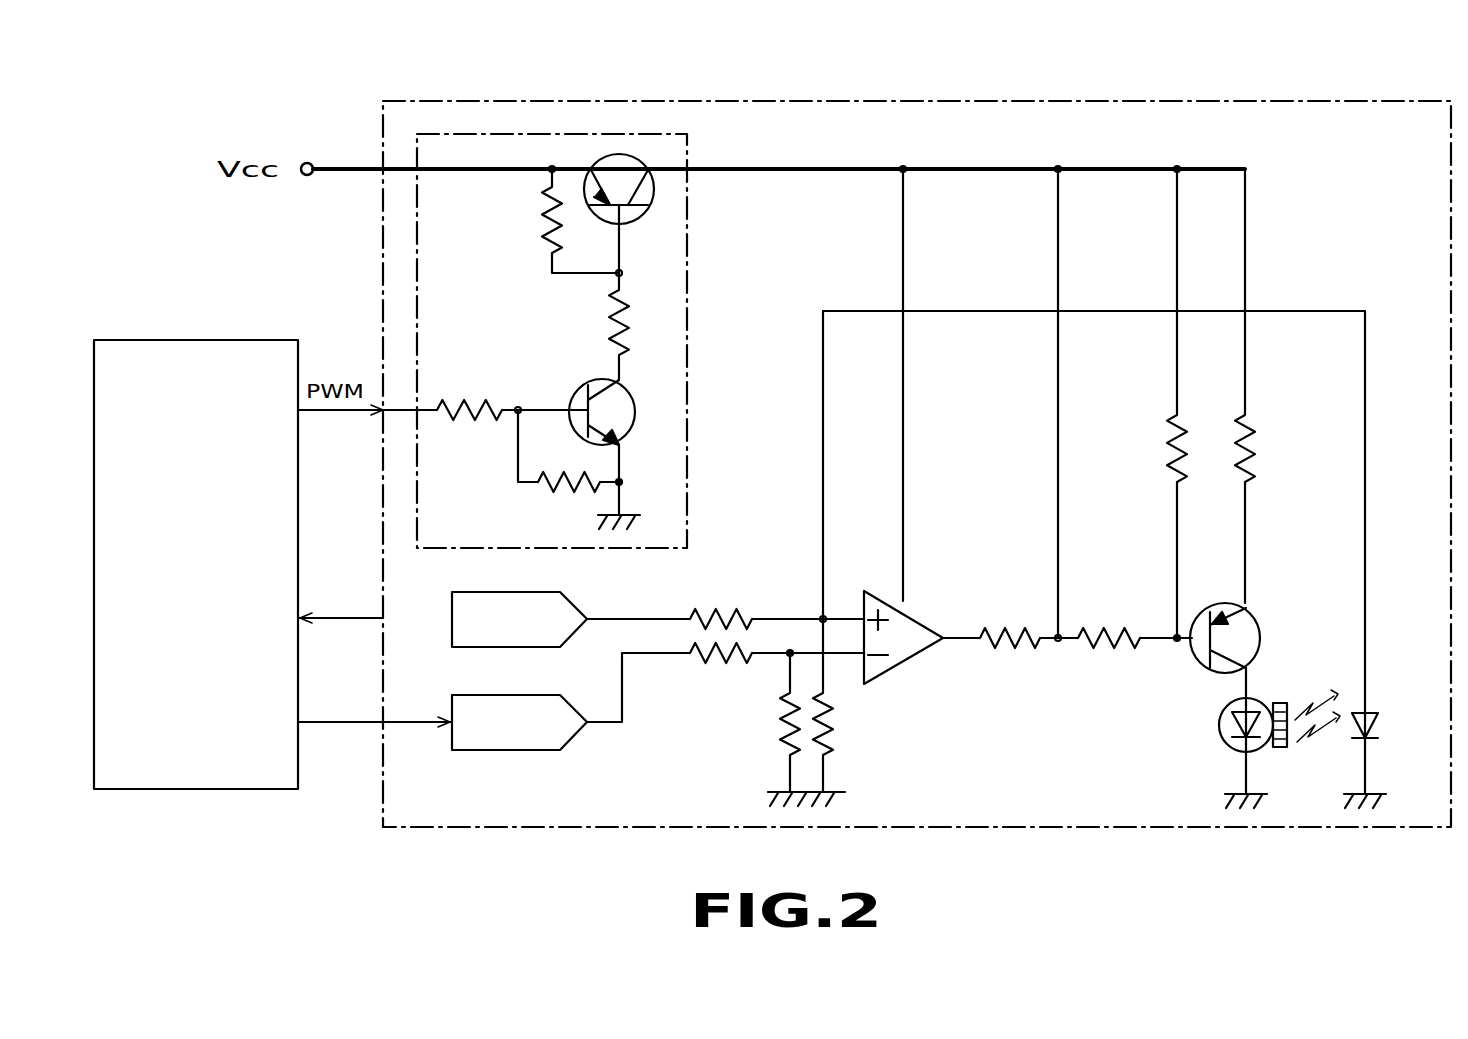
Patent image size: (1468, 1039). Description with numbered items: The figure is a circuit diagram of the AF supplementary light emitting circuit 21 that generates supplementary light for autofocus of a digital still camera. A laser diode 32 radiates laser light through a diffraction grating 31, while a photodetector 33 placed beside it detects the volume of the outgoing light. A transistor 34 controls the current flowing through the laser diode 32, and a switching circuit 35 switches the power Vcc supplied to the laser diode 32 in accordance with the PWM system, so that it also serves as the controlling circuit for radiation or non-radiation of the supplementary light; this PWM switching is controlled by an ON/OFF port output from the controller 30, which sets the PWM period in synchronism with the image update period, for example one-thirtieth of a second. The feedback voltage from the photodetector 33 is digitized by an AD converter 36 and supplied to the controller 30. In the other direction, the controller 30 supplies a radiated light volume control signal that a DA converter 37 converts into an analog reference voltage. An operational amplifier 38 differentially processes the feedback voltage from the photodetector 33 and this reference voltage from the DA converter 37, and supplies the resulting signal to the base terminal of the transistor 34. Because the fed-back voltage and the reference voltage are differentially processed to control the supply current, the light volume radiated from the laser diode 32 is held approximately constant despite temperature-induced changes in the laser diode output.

The AF supplementary light emitting circuit 21 is at (891, 100).
The controller 30 is at (195, 340).
The diffraction grating 31 is at (1281, 703).
The laser diode 32 is at (1220, 740).
The photodetector 33 is at (1370, 738).
The transistor 34 is at (1248, 612).
The switching circuit 35 is at (687, 222).
The AD converter 36 is at (562, 592).
The DA converter 37 is at (507, 750).
The operational amplifier 38 is at (910, 660).